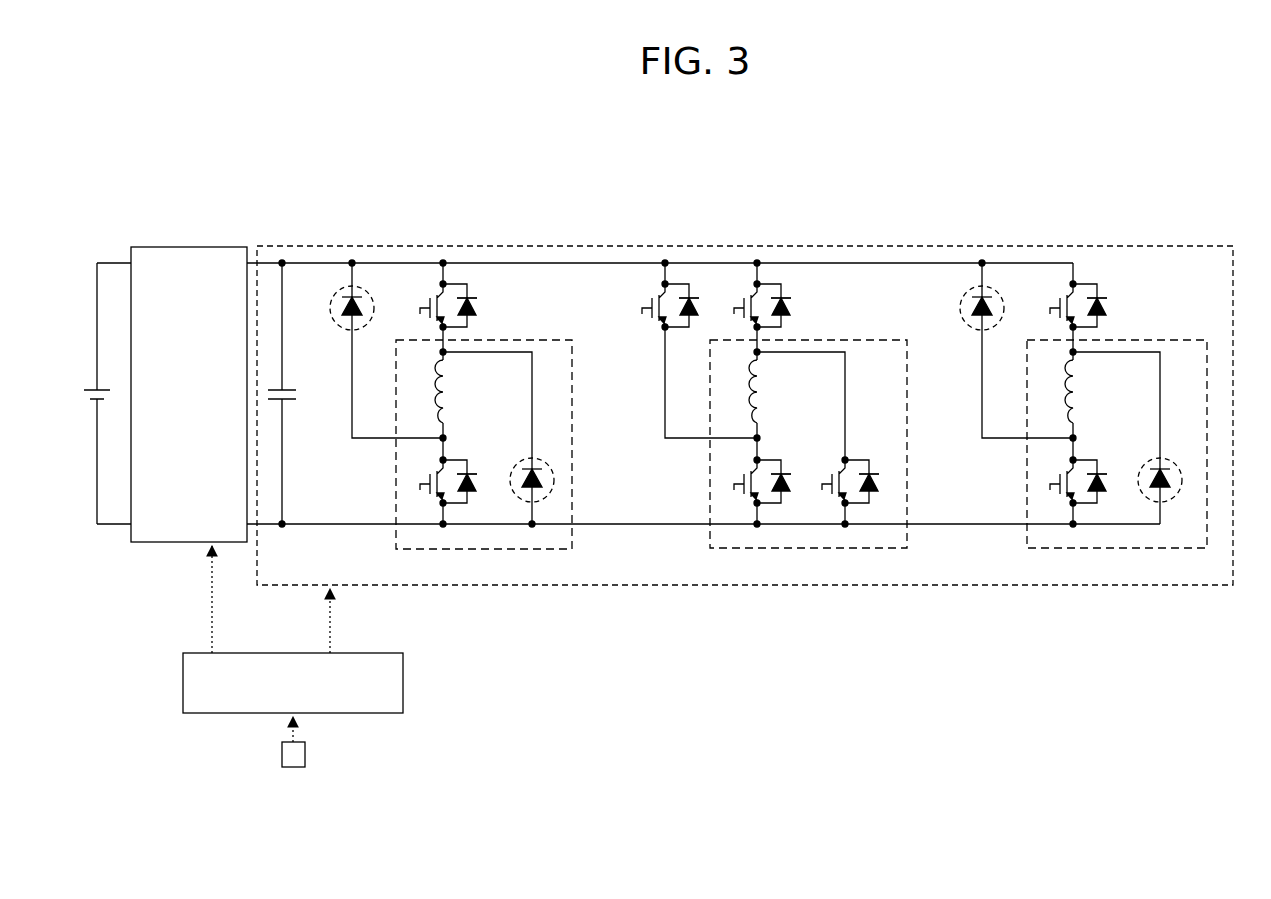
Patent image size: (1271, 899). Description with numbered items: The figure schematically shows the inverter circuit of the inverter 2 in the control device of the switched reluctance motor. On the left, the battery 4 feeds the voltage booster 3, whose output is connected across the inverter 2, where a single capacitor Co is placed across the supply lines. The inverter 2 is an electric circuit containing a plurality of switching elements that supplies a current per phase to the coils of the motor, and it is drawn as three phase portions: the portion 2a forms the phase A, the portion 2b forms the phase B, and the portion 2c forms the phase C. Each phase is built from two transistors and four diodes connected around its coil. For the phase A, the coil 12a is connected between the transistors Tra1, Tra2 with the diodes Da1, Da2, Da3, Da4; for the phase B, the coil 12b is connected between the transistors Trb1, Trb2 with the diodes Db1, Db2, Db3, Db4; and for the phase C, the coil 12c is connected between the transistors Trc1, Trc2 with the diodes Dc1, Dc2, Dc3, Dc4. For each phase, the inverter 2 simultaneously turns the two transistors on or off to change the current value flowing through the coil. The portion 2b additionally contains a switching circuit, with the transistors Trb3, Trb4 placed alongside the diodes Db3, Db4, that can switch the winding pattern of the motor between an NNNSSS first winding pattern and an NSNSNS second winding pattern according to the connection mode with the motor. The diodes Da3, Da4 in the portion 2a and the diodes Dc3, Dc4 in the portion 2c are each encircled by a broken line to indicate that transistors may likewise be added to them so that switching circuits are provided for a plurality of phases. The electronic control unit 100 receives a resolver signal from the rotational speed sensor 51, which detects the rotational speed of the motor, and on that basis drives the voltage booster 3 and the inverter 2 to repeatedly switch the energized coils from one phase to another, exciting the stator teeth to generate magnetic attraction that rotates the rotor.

The inverter 2 is at (1192, 247).
The voltage booster 3 is at (204, 246).
The battery 4 is at (89, 377).
The capacitor Co is at (292, 404).
The portion 2a is at (401, 561).
The portion 2b is at (718, 561).
The portion 2c is at (1033, 561).
The coil 12a is at (450, 394).
The coil 12b is at (764, 394).
The coil 12c is at (1080, 394).
The transistor Tra1 is at (429, 287).
The transistor Tra2 is at (416, 489).
The diode Da1 is at (480, 289).
The diode Da2 is at (473, 505).
The diode Da3 is at (337, 289).
The diode Da4 is at (540, 503).
The transistor Trb1 is at (743, 287).
The transistor Trb2 is at (730, 489).
The transistor Trb3 is at (649, 287).
The transistor Trb4 is at (832, 505).
The diode Db1 is at (791, 289).
The diode Db2 is at (789, 505).
The diode Db3 is at (701, 289).
The diode Db4 is at (877, 505).
The transistor Trc1 is at (1059, 287).
The transistor Trc2 is at (1046, 489).
The diode Dc1 is at (1106, 289).
The diode Dc2 is at (1104, 505).
The diode Dc3 is at (967, 290).
The diode Dc4 is at (1172, 503).
The electronic control unit 100 is at (403, 688).
The rotational speed sensor 51 is at (293, 768).